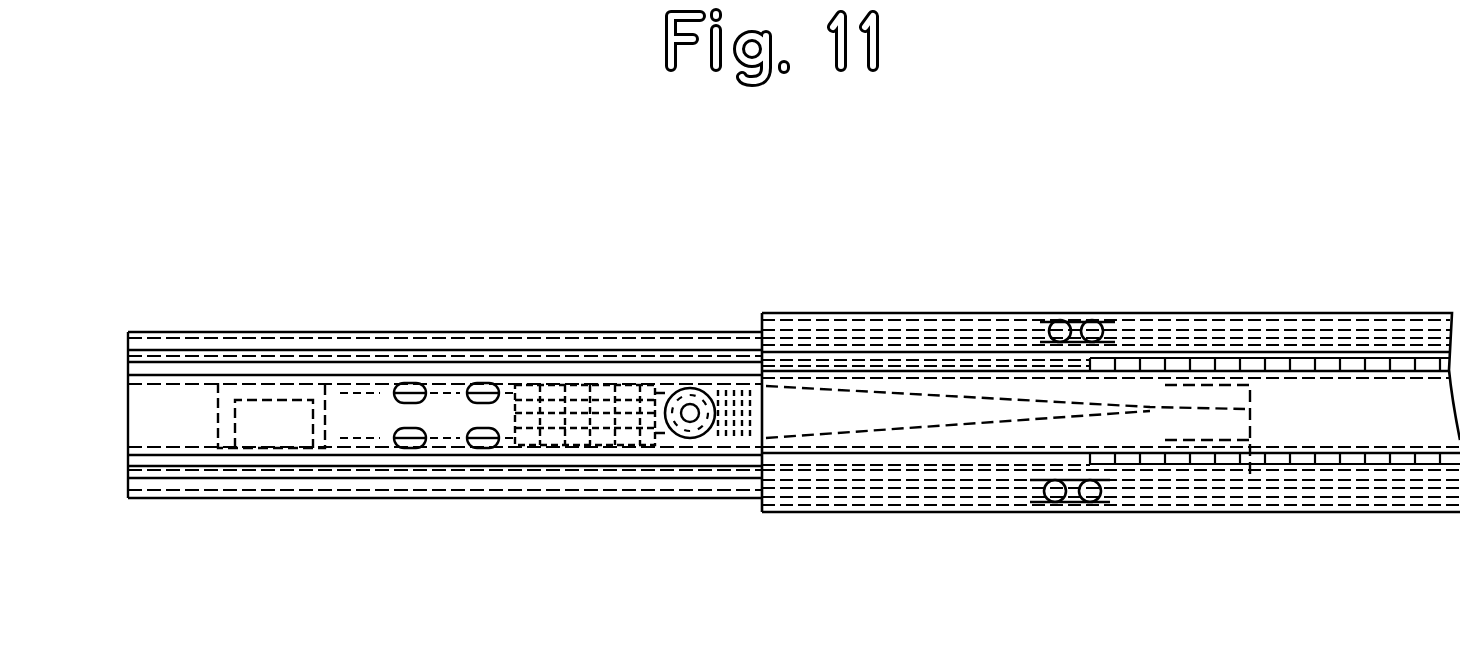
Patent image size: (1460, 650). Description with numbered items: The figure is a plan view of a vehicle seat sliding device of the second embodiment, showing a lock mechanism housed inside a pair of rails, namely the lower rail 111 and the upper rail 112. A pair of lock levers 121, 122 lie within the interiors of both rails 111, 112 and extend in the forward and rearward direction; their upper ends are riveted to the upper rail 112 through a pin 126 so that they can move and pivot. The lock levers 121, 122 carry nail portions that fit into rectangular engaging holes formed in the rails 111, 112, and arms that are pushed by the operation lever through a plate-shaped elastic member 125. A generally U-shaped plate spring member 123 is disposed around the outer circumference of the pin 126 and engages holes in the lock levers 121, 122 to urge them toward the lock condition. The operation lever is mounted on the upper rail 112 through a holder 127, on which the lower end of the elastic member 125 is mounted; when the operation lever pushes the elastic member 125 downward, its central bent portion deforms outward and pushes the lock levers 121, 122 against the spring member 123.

The lower rail 111 is at (812, 512).
The upper rail 112 is at (188, 400).
The lock lever 121 is at (1207, 432).
The lock lever 122 is at (1201, 390).
The spring member 123 is at (668, 435).
The elastic member 125 is at (534, 395).
The pin 126 is at (680, 390).
The holder 127 is at (291, 398).